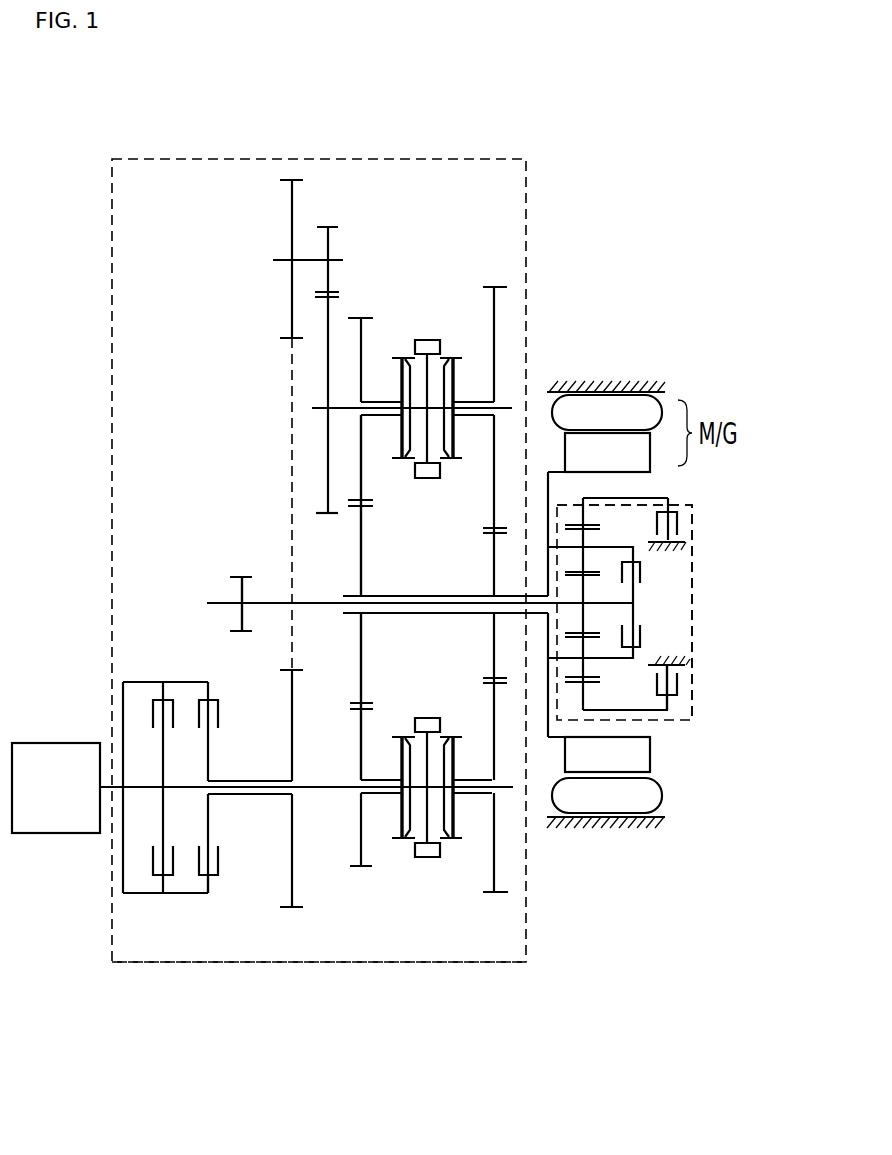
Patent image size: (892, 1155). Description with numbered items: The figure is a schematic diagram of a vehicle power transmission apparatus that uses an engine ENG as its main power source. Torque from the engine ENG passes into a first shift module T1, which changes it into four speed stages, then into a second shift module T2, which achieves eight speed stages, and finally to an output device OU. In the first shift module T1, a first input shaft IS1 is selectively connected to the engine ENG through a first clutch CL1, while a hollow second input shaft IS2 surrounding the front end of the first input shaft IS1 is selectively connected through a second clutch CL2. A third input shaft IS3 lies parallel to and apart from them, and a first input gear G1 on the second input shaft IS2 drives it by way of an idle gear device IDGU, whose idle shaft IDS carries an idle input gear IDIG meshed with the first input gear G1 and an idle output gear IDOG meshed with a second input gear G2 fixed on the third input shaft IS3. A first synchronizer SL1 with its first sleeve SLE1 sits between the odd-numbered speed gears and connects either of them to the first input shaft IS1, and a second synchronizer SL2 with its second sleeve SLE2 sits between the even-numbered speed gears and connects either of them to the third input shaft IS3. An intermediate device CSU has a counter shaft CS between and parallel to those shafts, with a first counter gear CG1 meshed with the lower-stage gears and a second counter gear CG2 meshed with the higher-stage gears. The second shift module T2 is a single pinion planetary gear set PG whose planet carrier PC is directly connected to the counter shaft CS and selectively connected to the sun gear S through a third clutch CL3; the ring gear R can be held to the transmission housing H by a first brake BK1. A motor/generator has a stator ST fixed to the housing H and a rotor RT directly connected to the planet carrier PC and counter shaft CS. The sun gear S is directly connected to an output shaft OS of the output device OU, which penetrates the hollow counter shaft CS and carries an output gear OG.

The engine ENG is at (56, 788).
The first shift module T1 is at (392, 970).
The second shift module T2 is at (698, 638).
The idle gear device IDGU is at (276, 196).
The idle input gear IDIG is at (292, 189).
The idle shaft IDS is at (280, 258).
The idle output gear IDOG is at (328, 240).
The second input gear G2 is at (328, 478).
The first input gear G1 is at (292, 893).
The first input shaft IS1 is at (320, 790).
The second input shaft IS2 is at (258, 795).
The third input shaft IS3 is at (312, 406).
The first counter gear CG1 is at (362, 684).
The second counter gear CG2 is at (494, 638).
The first synchronizer SL1 is at (465, 933).
The second synchronizer SL2 is at (466, 246).
The first sleeve SLE1 is at (432, 857).
The second sleeve SLE2 is at (432, 340).
The output shaft OS is at (312, 604).
The counter shaft CS is at (396, 614).
The intermediate device CSU is at (453, 588).
The output device OU is at (224, 570).
The output gear OG is at (250, 633).
The first clutch CL1 is at (152, 695).
The second clutch CL2 is at (195, 694).
The third clutch CL3 is at (656, 572).
The stator ST is at (607, 604).
The rotor RT is at (607, 603).
The transmission housing H is at (630, 390).
The planet carrier PC is at (640, 497).
The ring gear R is at (570, 521).
The sun gear S is at (570, 573).
The planetary gear set PG is at (602, 666).
The first brake BK1 is at (686, 514).